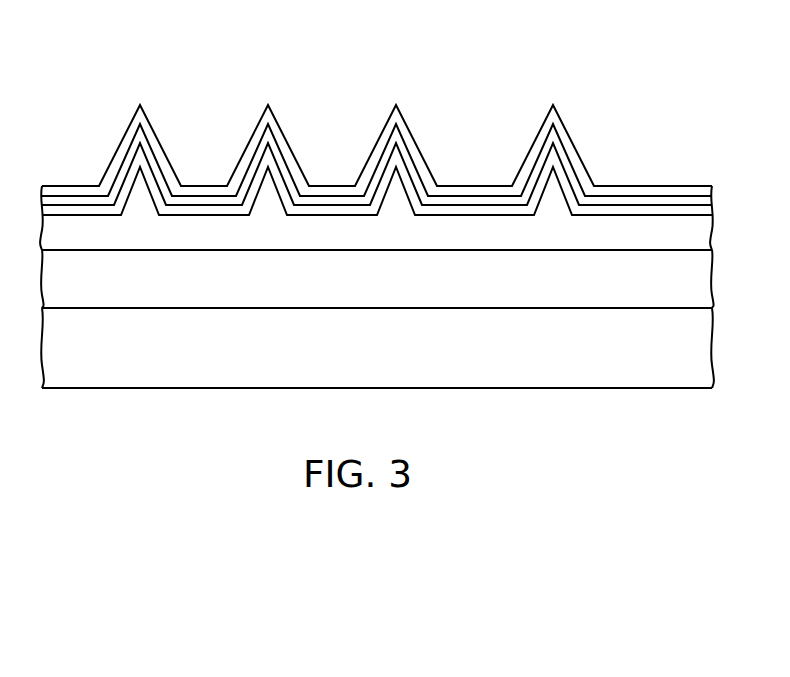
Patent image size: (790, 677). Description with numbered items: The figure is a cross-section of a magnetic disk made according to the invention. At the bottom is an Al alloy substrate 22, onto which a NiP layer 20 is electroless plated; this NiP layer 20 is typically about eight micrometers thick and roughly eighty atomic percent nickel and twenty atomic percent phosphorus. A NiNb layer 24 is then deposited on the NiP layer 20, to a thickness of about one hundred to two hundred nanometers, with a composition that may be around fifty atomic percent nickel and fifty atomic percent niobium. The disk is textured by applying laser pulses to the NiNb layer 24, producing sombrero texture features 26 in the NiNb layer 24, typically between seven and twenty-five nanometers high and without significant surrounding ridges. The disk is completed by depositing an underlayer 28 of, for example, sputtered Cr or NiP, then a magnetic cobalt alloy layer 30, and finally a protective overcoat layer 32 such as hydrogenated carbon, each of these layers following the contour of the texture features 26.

The NiP layer 20 is at (678, 290).
The Al alloy substrate 22 is at (678, 363).
The NiNb layer 24 is at (678, 243).
The sombrero texture features 26 is at (150, 91).
The underlayer 28 is at (328, 216).
The magnetic cobalt alloy layer 30 is at (310, 197).
The protective overcoat layer 32 is at (335, 187).